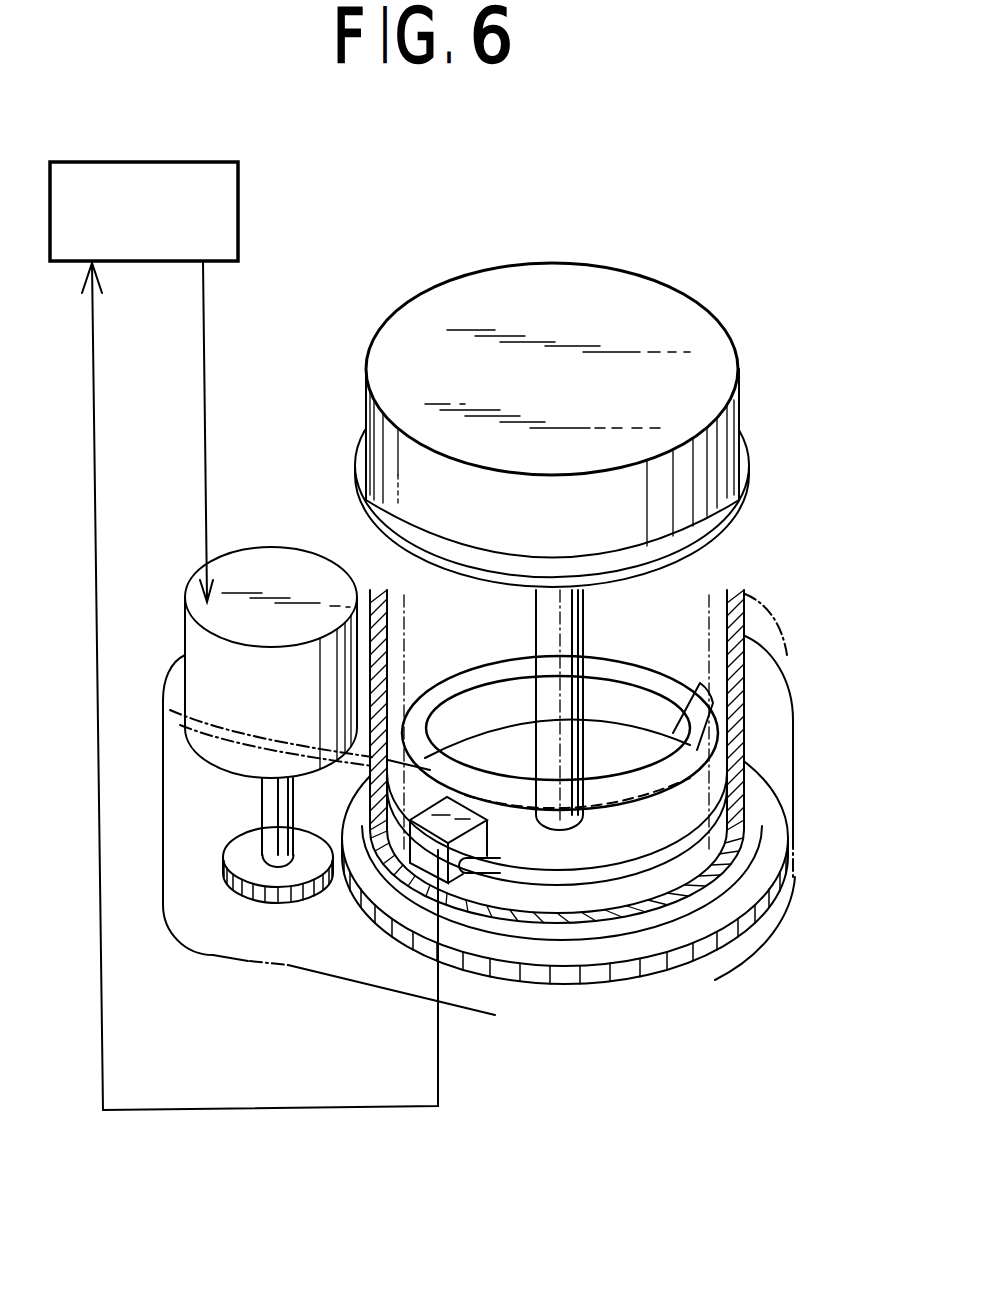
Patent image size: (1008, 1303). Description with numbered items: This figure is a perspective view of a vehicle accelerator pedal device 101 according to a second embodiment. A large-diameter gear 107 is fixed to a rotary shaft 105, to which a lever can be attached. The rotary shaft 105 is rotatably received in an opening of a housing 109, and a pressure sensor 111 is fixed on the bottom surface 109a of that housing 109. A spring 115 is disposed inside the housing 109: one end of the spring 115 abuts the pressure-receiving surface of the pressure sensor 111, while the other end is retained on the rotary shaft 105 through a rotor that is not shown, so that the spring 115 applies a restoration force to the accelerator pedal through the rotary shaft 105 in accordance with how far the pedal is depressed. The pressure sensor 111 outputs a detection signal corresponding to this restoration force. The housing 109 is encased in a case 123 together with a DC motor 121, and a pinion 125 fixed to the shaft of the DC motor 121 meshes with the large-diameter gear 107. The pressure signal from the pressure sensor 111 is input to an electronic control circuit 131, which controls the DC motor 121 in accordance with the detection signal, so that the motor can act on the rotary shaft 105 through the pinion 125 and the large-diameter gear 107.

The vehicle accelerator pedal device 101 is at (660, 232).
The rotary shaft 105 is at (742, 542).
The large-diameter gear 107 is at (575, 983).
The housing 109 is at (566, 622).
The bottom surface 109a is at (637, 872).
The pressure sensor 111 is at (488, 850).
The spring 115 is at (635, 680).
The DC motor 121 is at (262, 575).
The case 123 is at (243, 958).
The pinion 125 is at (311, 898).
The electronic control circuit 131 is at (240, 186).